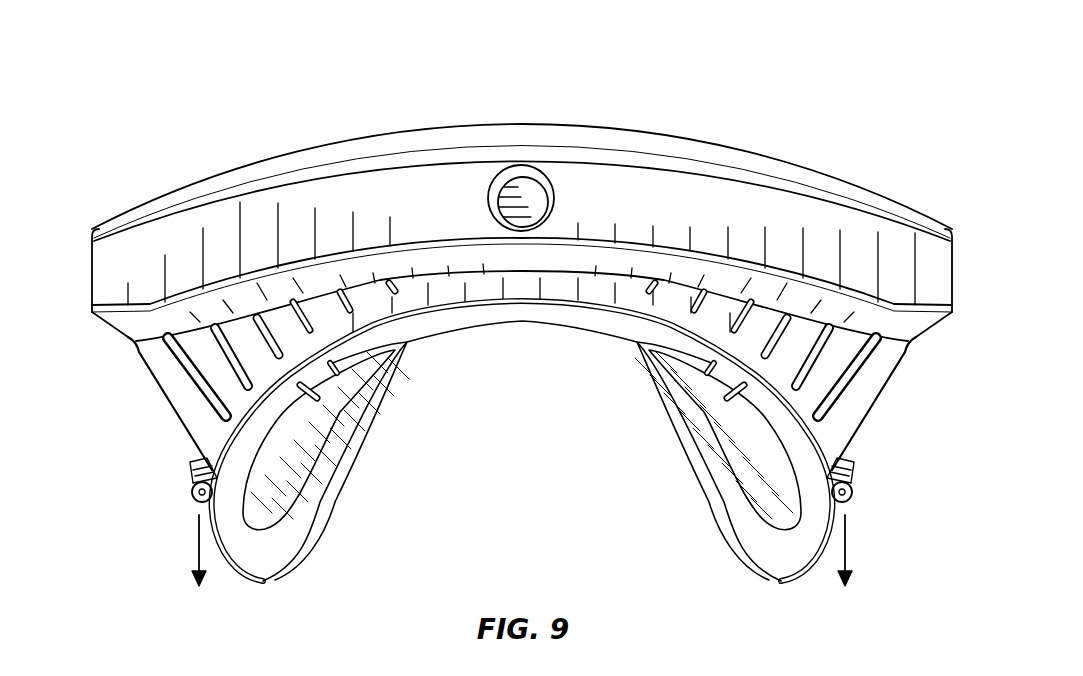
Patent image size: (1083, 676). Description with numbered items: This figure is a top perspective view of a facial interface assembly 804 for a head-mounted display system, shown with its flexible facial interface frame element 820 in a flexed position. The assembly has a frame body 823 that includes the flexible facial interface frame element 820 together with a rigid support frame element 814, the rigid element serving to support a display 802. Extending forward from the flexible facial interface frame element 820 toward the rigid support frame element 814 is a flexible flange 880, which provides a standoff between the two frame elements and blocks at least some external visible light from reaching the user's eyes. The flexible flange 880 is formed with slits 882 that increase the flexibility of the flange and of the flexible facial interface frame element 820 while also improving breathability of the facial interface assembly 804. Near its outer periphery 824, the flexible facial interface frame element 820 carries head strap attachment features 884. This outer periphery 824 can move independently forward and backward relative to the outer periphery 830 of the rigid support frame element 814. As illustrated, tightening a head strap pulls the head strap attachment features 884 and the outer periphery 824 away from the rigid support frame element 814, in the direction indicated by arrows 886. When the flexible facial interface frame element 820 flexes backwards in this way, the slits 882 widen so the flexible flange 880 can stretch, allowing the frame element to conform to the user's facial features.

The display 802 is at (604, 128).
The facial interface assembly 804 is at (181, 92).
The rigid support frame element 814 is at (415, 213).
The flexible facial interface frame element 820 is at (700, 454).
The frame body 823 is at (779, 212).
The outer periphery 824 is at (320, 568).
The outer periphery 830 is at (98, 201).
The flexible flange 880 is at (180, 401).
The slits 882 is at (337, 371).
The head strap attachment features 884 is at (192, 489).
The arrows 886 is at (197, 548).